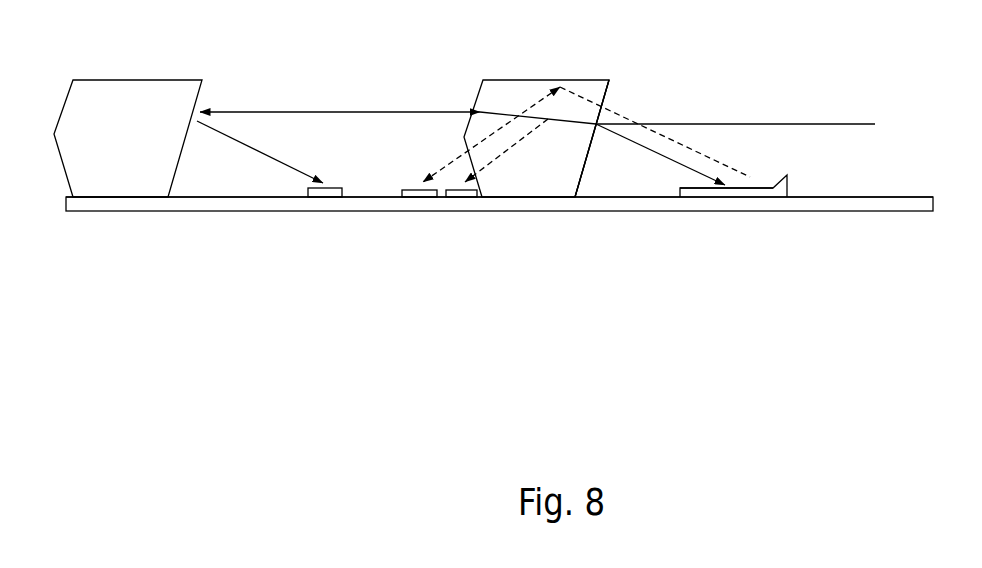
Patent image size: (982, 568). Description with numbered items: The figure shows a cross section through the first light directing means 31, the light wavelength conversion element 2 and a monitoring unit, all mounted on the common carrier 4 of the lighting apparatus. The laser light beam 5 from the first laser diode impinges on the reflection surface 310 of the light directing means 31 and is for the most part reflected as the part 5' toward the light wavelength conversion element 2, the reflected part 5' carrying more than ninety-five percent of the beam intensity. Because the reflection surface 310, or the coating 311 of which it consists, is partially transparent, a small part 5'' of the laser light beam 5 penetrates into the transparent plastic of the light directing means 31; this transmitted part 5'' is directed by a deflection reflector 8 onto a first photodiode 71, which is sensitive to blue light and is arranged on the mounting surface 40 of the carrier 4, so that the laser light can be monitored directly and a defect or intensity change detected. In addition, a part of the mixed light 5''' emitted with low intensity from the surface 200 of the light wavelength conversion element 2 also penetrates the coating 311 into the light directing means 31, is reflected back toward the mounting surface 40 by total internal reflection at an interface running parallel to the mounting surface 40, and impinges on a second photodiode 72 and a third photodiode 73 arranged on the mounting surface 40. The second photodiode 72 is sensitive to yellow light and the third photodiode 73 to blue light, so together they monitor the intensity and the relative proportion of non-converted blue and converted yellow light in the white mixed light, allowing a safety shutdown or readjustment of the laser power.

The light wavelength conversion element 2 is at (735, 197).
The surface of the light wavelength conversion element 200 is at (788, 197).
The carrier 4 is at (875, 211).
The mounting surface 40 is at (907, 197).
The laser light beam 5 is at (677, 80).
The reflected part of the laser light beam 5' is at (660, 212).
The transmitted part of the laser light beam 5'' is at (383, 167).
The mixed light 5''' is at (655, 106).
The deflection reflector 8 is at (128, 177).
The first light directing means 31 is at (533, 80).
The reflection surface 310 is at (596, 222).
The coating 311 is at (592, 201).
The first photodiode 71 is at (322, 197).
The second photodiode 72 is at (422, 197).
The third photodiode 73 is at (462, 197).